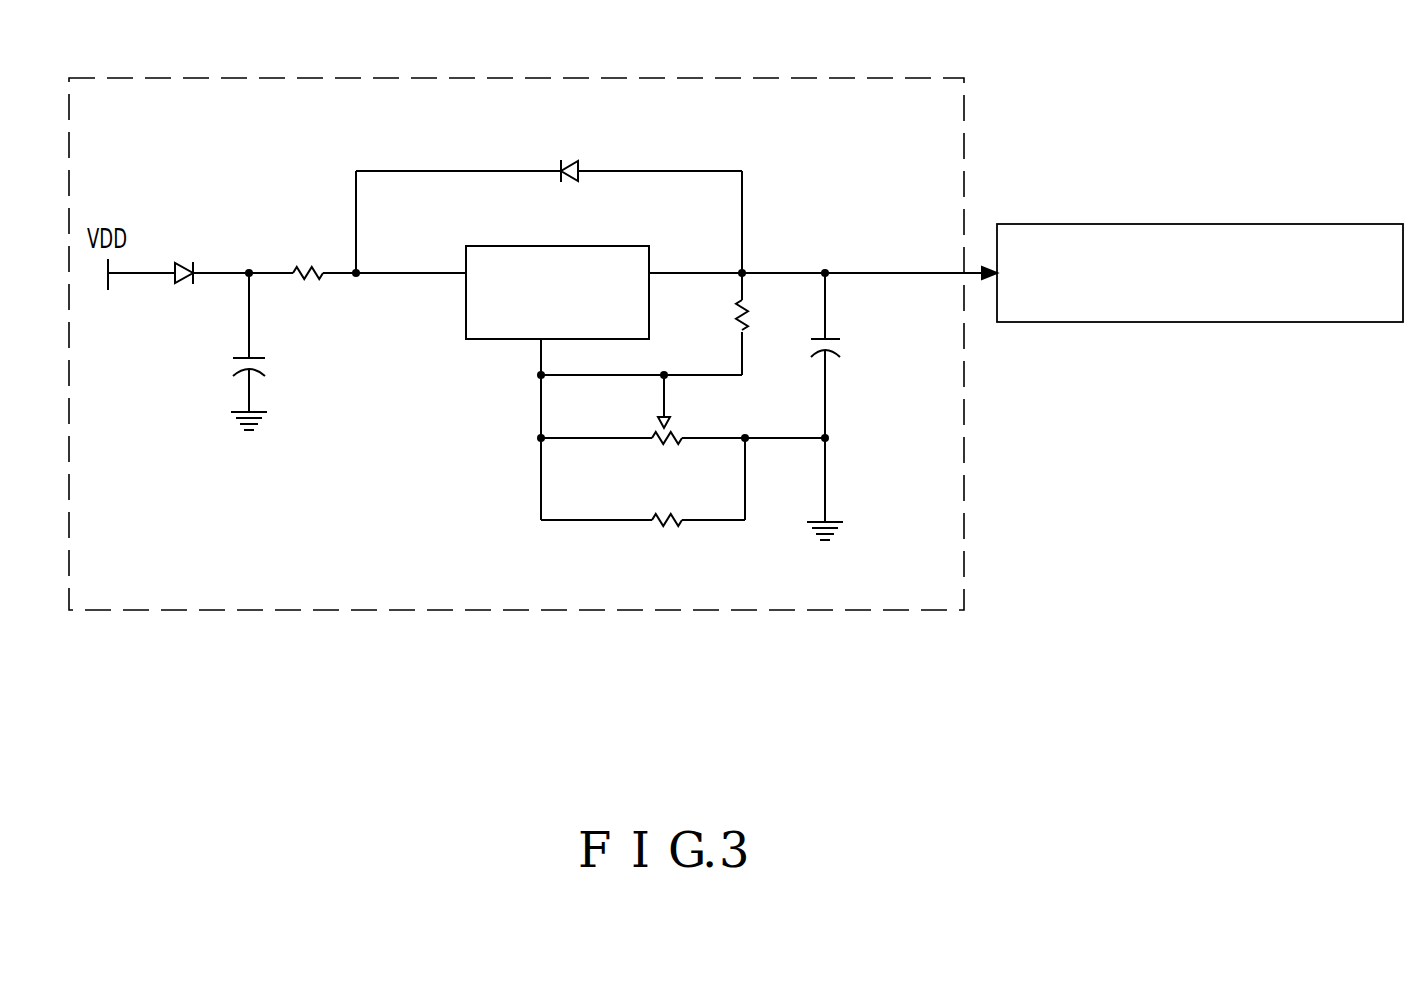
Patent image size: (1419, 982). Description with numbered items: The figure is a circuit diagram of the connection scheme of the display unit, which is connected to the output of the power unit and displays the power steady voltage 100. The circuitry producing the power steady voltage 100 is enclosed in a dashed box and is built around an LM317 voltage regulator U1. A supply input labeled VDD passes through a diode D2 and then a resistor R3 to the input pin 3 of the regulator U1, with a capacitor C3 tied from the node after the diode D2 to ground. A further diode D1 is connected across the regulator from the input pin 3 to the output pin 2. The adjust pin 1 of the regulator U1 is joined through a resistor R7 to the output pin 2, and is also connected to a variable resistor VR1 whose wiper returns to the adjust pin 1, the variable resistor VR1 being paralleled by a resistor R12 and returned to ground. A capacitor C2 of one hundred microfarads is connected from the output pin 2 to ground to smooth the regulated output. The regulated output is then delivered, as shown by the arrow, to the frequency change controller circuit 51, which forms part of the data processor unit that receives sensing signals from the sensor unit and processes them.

The power steady voltage 100 is at (427, 590).
The frequency change controller circuit 51 is at (1090, 313).
The adjust pin of voltage regulator U1 1 is at (526, 360).
The output pin of voltage regulator U1 2 is at (695, 258).
The input pin of voltage regulator U1 3 is at (369, 222).
The LM317 voltage regulator U1 is at (540, 256).
The diode IN4007 D1 is at (570, 169).
The diode IN4007 D2 is at (185, 276).
The resistor R3 is at (307, 251).
The resistor R7 is at (759, 313).
The resistor 205K R12 is at (643, 556).
The variable resistor SVR5K VR1 is at (643, 437).
The capacitor 100UF/25V C2 is at (881, 406).
The capacitor C3 is at (266, 351).